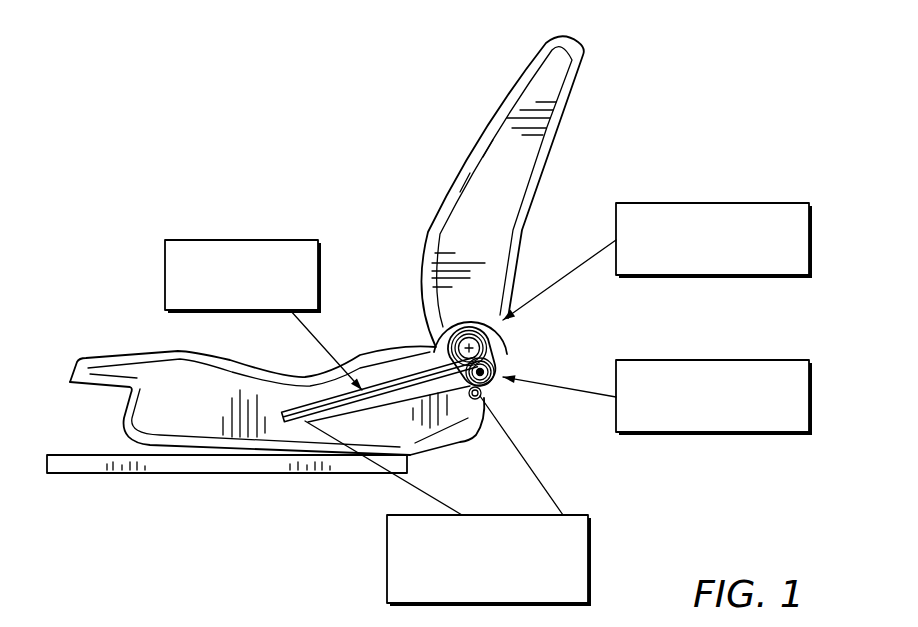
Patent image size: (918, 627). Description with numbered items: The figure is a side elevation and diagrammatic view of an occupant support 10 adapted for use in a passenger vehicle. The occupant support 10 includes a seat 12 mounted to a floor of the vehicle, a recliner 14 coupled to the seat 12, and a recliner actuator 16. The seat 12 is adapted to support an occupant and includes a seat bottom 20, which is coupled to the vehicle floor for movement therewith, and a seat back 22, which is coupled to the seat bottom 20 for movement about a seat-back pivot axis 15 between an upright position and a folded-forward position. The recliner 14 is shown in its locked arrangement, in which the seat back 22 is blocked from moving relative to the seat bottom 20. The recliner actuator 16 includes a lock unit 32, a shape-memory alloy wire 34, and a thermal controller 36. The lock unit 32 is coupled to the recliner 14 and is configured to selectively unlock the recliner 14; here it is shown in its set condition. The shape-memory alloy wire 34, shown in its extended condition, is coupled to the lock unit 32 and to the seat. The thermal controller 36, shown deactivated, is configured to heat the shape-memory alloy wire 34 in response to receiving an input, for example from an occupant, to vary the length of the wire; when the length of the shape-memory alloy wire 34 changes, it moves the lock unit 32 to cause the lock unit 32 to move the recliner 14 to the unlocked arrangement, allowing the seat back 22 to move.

The occupant support 10 is at (146, 148).
The seat 12 is at (456, 130).
The recliner 14 is at (760, 203).
The seat-back pivot axis 15 is at (492, 340).
The recliner actuator 16 is at (512, 400).
The seat bottom 20 is at (103, 350).
The seat back 22 is at (419, 240).
The lock unit 32 is at (665, 360).
The shape-memory alloy wire 34 is at (215, 240).
The thermal controller 36 is at (387, 557).